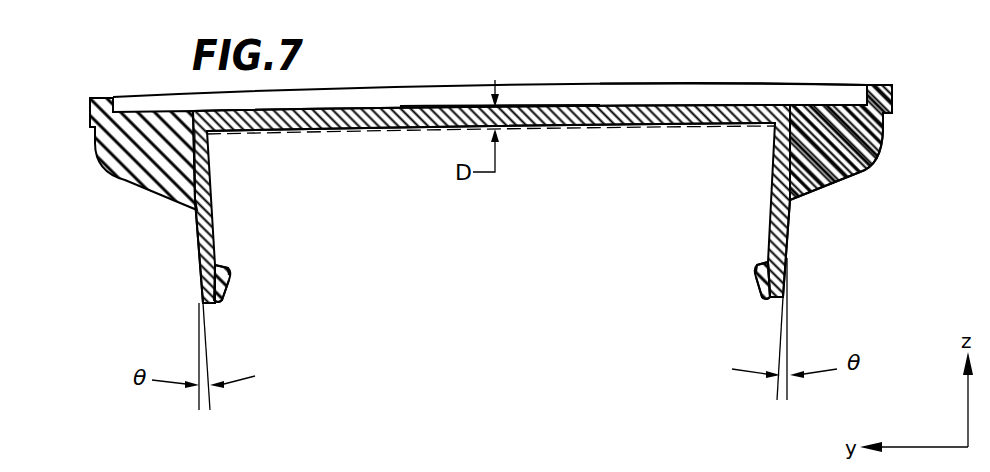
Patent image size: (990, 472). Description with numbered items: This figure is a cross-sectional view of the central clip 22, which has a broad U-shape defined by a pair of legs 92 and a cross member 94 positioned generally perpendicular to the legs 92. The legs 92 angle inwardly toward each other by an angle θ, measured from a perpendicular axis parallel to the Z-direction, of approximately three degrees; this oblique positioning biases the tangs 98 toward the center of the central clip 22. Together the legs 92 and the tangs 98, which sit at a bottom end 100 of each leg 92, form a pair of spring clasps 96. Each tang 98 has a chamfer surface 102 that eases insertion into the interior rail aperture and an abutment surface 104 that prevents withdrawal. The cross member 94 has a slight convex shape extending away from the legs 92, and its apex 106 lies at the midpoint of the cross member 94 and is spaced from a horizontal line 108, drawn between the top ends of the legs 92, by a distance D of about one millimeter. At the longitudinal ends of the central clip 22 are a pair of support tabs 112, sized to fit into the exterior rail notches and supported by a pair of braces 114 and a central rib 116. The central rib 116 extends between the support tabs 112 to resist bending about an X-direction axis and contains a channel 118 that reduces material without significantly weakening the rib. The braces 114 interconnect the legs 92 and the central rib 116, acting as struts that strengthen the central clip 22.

The central clip 22 is at (621, 62).
The legs 92 is at (195, 234).
The cross member 94 is at (350, 127).
The spring clasps 96 is at (246, 230).
The tangs 98 is at (230, 276).
The bottom end 100 is at (201, 306).
The chamfer surface 102 is at (229, 290).
The abutment surface 104 is at (220, 267).
The apex 106 is at (512, 112).
The horizontal line 108 is at (630, 128).
The support tabs 112 is at (88, 110).
The braces 114 is at (138, 173).
The central rib 116 is at (710, 84).
The channel 118 is at (408, 95).